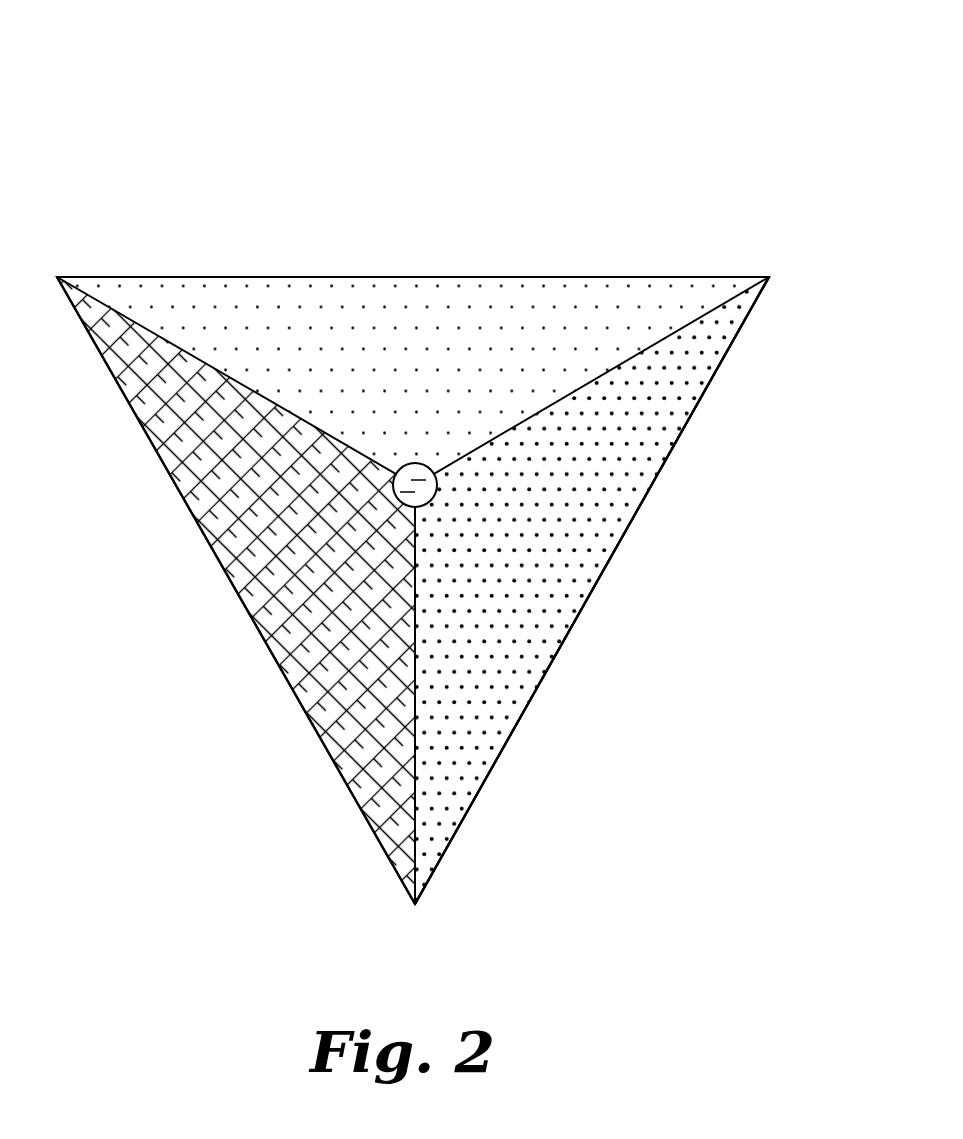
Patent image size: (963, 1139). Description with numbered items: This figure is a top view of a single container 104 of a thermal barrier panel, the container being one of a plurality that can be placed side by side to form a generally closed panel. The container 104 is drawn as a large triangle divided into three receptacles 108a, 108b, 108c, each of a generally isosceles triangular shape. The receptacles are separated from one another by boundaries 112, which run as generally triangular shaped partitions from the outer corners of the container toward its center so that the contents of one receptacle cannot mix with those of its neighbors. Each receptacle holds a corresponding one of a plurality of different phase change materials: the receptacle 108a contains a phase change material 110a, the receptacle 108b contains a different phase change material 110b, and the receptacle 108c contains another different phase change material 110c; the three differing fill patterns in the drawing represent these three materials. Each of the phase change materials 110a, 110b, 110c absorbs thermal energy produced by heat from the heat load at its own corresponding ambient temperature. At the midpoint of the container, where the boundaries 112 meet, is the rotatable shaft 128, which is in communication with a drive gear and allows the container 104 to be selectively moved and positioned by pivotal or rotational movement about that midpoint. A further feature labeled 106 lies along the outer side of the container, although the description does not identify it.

The container 104 is at (125, 100).
The outer edge of corner cube 106 is at (588, 722).
The receptacle 108a is at (320, 634).
The receptacle 108b is at (598, 482).
The receptacle 108c is at (353, 317).
The phase change material 110a is at (205, 537).
The phase change material 110b is at (560, 593).
The phase change material 110c is at (558, 307).
The boundary 112 is at (183, 349).
The rotatable shaft 128 is at (393, 485).